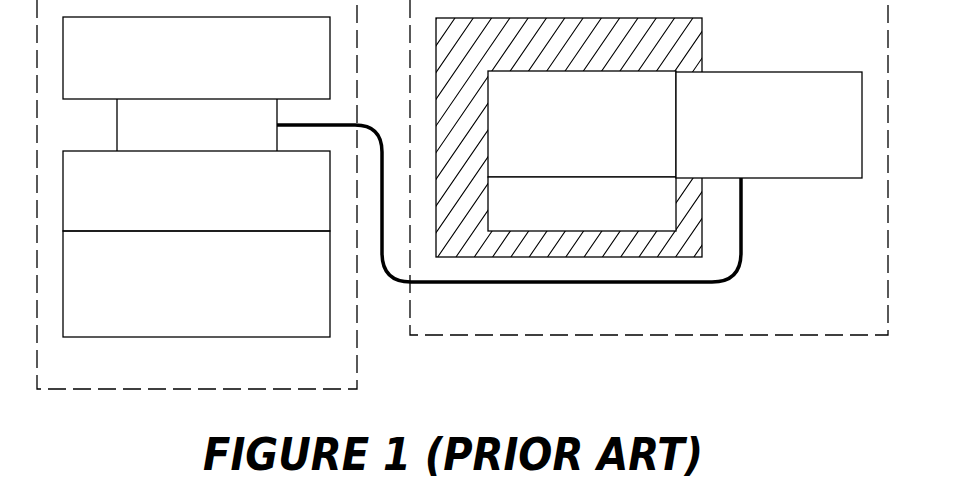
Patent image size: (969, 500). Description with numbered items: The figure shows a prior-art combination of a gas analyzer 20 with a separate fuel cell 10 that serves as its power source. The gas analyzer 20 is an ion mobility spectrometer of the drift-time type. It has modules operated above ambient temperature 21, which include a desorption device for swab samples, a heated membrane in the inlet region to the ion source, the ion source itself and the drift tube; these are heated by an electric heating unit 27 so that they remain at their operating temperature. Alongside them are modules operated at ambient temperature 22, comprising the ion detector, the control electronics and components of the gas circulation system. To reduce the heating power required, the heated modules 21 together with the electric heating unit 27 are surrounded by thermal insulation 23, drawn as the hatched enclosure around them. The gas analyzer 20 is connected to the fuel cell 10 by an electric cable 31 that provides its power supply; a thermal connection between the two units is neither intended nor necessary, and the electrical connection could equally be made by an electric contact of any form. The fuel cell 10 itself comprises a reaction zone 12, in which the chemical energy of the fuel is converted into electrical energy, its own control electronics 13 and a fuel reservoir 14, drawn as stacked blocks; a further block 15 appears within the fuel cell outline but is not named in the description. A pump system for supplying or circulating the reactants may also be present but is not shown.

The fuel cell 10 is at (197, 194).
The reaction zone 12 is at (197, 125).
The control electronics 13 is at (196, 191).
The fuel reservoir 14 is at (196, 284).
The top layer 15 is at (196, 58).
The gas analyzer 20 is at (649, 167).
The modules operated above ambient temperature 21 is at (582, 124).
The modules operated at ambient temperature 22 is at (769, 125).
The thermal insulation 23 is at (574, 137).
The electric heating unit 27 is at (582, 204).
The electric cable 31 is at (382, 260).